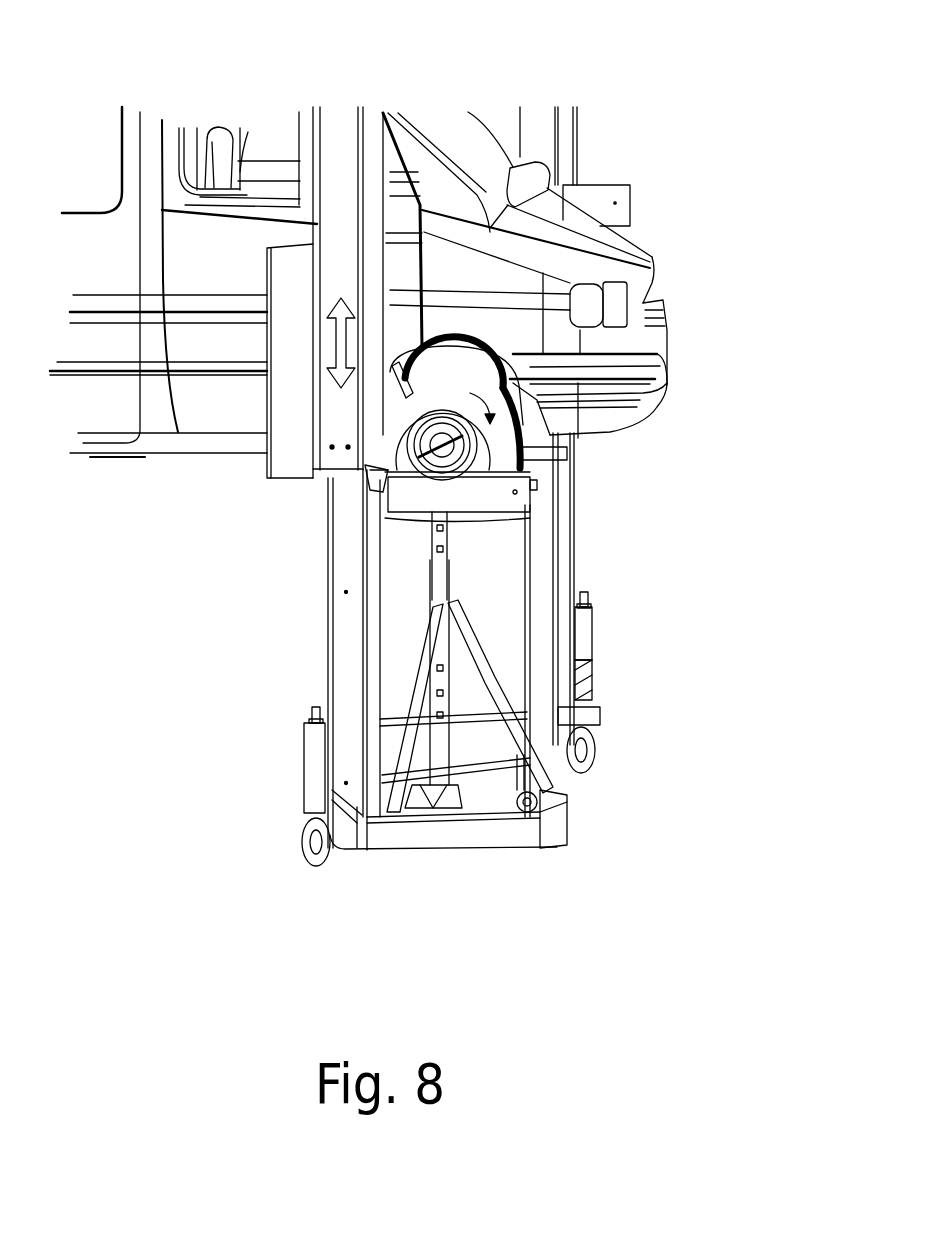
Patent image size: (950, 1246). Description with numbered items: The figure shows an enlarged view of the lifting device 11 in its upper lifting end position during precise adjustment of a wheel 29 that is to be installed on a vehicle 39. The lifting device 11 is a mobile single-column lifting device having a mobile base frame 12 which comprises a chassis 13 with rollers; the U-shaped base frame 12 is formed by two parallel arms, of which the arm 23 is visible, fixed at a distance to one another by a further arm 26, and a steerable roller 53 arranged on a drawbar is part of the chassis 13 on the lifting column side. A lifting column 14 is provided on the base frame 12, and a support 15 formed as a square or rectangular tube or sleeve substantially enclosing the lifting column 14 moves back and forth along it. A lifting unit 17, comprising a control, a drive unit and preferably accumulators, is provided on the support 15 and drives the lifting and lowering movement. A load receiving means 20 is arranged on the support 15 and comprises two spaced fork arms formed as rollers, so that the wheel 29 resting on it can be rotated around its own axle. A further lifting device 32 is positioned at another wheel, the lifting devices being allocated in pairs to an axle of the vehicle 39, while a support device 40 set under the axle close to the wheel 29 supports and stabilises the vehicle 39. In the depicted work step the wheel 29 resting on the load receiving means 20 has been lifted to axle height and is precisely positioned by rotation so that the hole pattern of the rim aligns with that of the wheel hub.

The lifting device 11 is at (287, 605).
The base frame 12 is at (585, 826).
The chassis 13 is at (414, 878).
The lifting column 14 is at (345, 548).
The support 15 is at (342, 127).
The lifting unit 17 is at (290, 443).
The load receiving means 20 is at (533, 500).
The arm 23 is at (568, 810).
The further arm 26 is at (463, 853).
The wheel 29 is at (522, 453).
The lifting device 32 is at (600, 629).
The vehicle 39 is at (482, 98).
The support device 40 is at (478, 640).
The steerable roller 53 is at (315, 877).